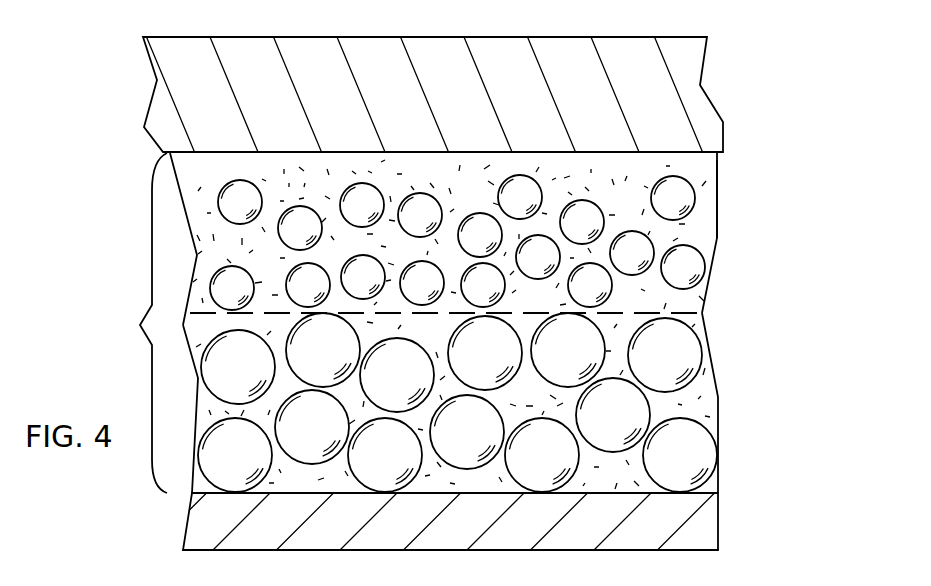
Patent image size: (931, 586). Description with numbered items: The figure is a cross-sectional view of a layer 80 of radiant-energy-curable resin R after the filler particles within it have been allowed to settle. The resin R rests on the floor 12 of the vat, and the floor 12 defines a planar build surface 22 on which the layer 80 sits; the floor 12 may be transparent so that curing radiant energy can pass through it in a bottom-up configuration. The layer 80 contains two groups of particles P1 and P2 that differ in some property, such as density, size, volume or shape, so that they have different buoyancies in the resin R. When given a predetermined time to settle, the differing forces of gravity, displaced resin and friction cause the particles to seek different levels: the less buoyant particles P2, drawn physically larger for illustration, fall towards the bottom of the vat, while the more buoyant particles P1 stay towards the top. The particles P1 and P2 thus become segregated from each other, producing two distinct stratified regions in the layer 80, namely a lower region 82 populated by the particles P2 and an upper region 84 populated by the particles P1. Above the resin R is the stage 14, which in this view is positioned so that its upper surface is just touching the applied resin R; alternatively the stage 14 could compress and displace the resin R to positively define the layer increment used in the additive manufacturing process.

The stage 14 is at (704, 103).
The layer 80 is at (136, 323).
The upper region 84 is at (486, 239).
The lower region 82 is at (491, 403).
The radiant-energy-curable resin R is at (717, 186).
The particles P1 is at (597, 234).
The particles P2 is at (694, 465).
The build surface 22 is at (719, 486).
The floor 12 is at (708, 532).